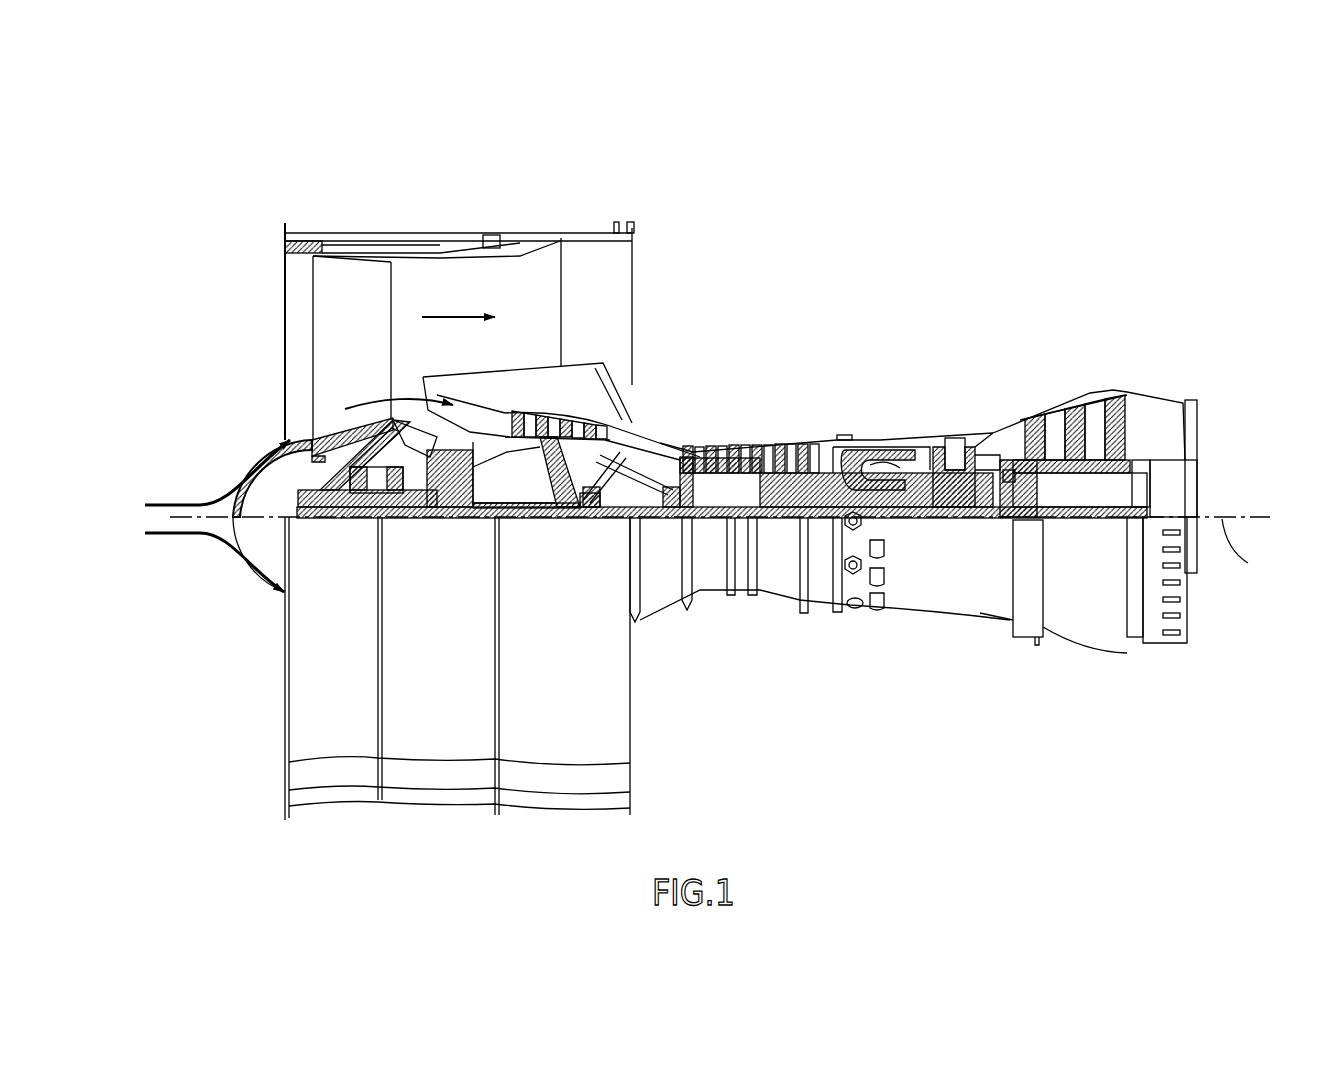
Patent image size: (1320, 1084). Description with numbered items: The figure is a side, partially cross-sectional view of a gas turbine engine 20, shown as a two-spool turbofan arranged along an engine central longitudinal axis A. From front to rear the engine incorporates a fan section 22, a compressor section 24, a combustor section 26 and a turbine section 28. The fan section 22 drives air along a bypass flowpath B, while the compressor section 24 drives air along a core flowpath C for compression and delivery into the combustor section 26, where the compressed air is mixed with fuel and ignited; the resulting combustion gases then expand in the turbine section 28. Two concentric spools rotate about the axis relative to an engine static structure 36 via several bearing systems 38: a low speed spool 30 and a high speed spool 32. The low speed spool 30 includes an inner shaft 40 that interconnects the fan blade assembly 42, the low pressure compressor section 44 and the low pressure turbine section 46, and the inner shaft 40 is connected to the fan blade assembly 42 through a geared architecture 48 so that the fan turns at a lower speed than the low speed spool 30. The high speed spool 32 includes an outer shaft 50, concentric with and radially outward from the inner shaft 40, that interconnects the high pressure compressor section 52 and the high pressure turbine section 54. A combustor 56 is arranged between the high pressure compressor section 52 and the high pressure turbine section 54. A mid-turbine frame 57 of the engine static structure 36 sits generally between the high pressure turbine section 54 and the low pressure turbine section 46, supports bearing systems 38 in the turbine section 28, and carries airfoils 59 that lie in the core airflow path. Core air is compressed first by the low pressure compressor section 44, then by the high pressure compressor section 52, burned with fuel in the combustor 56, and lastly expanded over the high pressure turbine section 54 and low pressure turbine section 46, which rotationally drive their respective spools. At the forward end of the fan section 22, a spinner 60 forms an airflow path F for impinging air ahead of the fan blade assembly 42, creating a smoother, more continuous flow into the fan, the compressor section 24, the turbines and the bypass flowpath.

The gas turbine engine 20 is at (908, 196).
The fan section 22 is at (401, 220).
The compressor section 24 is at (656, 424).
The combustor section 26 is at (870, 426).
The turbine section 28 is at (1059, 395).
The low speed spool 30 is at (780, 523).
The high speed spool 32 is at (806, 490).
The engine static structure 36 is at (820, 607).
The bearing systems 38 is at (370, 522).
The inner shaft 40 is at (647, 522).
The fan blade assembly 42 is at (367, 334).
The low pressure compressor section 44 is at (535, 415).
The low pressure turbine section 46 is at (1105, 395).
The geared architecture 48 is at (432, 522).
The outer shaft 50 is at (920, 522).
The high pressure compressor section 52 is at (752, 477).
The high pressure turbine section 54 is at (950, 450).
The combustor 56 is at (893, 465).
The mid-turbine frame 57 is at (994, 431).
The airfoils 59 is at (1037, 477).
The spinner 60 is at (240, 480).